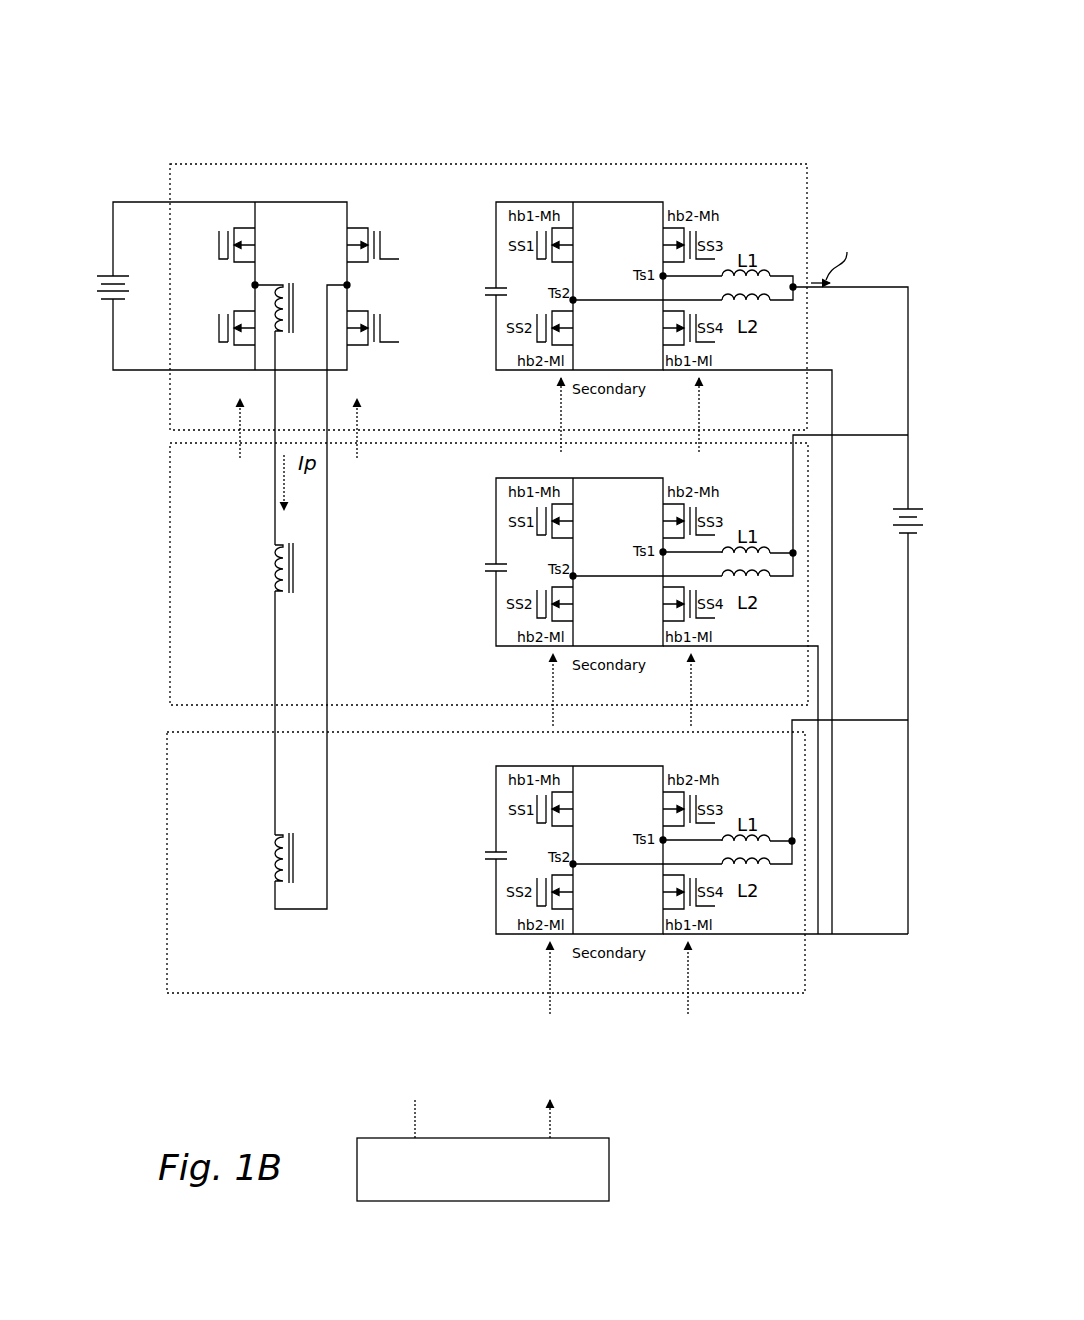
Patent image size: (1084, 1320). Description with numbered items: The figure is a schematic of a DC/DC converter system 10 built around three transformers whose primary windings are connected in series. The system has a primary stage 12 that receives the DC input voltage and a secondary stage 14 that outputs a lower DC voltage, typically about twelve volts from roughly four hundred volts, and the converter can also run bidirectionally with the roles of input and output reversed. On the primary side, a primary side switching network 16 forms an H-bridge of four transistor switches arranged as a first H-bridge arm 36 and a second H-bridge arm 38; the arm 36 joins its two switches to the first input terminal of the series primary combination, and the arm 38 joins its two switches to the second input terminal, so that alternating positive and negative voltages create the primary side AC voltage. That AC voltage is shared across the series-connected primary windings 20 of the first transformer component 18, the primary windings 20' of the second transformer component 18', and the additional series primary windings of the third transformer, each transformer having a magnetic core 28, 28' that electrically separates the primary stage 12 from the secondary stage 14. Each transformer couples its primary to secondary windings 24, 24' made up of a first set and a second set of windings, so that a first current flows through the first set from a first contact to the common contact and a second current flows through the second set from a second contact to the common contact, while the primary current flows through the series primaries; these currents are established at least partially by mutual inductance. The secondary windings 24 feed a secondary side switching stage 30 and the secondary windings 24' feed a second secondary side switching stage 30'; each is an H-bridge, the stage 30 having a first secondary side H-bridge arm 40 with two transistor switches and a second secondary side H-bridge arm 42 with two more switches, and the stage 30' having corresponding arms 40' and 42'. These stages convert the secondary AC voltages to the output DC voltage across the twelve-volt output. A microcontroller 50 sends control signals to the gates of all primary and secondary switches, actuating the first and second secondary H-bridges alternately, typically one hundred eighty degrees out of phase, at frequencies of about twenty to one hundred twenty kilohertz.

The DC/DC converter system 10 is at (683, 90).
The primary stage 12 is at (262, 155).
The secondary stage 14 is at (727, 156).
The primary side switching network 16 is at (367, 186).
The first transformer component 18 is at (587, 286).
The second transformer component 18' is at (592, 553).
The primary windings 20 is at (227, 308).
The primary windings 20' is at (236, 595).
The secondary windings 24 is at (795, 321).
The secondary windings 24' is at (799, 601).
The core 28 is at (290, 231).
The core 28' is at (332, 563).
The secondary side switching stage 30 is at (648, 231).
The secondary side switching stage 30' is at (531, 573).
The first H-bridge arm 36 is at (243, 445).
The second H-bridge arm 38 is at (357, 445).
The first secondary side H-bridge arm 40 is at (561, 425).
The second secondary side H-bridge arm 42 is at (698, 425).
The first secondary side H-bridge arm 40' is at (560, 700).
The second secondary side H-bridge arm 42' is at (697, 700).
The microcontroller 50 is at (609, 1181).